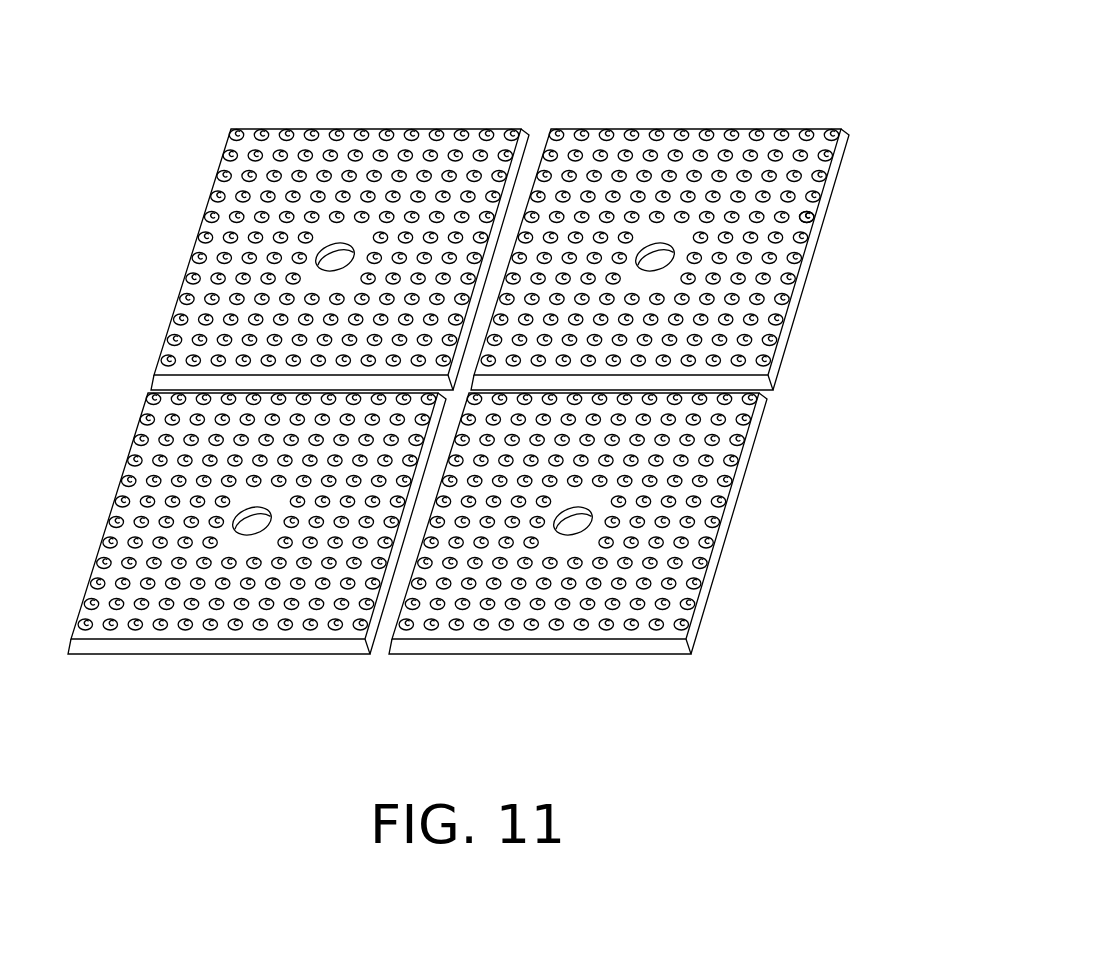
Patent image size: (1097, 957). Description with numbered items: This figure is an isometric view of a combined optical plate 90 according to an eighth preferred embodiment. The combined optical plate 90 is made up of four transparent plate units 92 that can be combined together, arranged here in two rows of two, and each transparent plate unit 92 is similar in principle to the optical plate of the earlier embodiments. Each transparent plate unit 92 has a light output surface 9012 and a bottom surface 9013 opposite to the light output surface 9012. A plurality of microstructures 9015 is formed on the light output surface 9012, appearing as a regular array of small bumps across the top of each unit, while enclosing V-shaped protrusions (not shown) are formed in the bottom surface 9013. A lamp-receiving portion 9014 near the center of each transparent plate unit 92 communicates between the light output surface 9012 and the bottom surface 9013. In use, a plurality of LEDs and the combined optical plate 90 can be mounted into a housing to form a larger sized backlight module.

The combined optical plate 90 is at (495, 354).
The transparent plate unit 92 is at (495, 360).
The light output surface 9012 is at (711, 252).
The bottom surface 9013 is at (856, 259).
The lamp-receiving portion 9014 is at (786, 253).
The microstructures 9015 is at (873, 203).